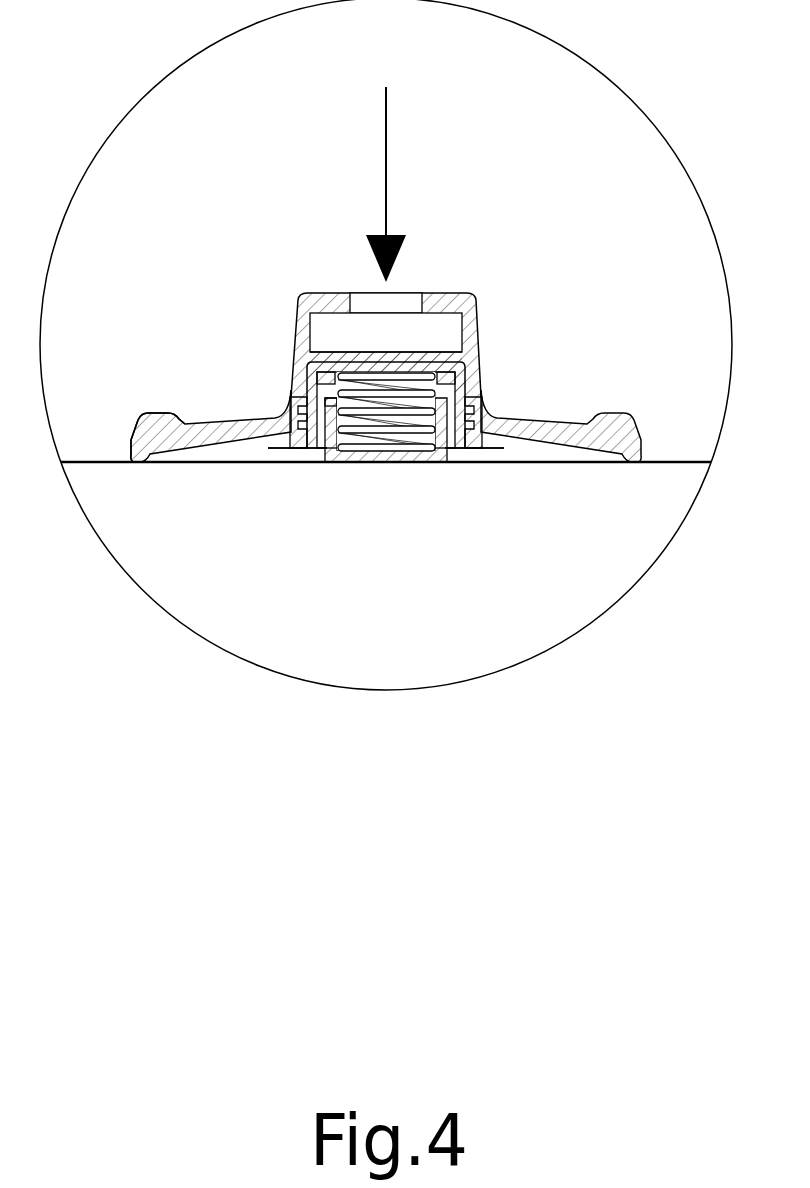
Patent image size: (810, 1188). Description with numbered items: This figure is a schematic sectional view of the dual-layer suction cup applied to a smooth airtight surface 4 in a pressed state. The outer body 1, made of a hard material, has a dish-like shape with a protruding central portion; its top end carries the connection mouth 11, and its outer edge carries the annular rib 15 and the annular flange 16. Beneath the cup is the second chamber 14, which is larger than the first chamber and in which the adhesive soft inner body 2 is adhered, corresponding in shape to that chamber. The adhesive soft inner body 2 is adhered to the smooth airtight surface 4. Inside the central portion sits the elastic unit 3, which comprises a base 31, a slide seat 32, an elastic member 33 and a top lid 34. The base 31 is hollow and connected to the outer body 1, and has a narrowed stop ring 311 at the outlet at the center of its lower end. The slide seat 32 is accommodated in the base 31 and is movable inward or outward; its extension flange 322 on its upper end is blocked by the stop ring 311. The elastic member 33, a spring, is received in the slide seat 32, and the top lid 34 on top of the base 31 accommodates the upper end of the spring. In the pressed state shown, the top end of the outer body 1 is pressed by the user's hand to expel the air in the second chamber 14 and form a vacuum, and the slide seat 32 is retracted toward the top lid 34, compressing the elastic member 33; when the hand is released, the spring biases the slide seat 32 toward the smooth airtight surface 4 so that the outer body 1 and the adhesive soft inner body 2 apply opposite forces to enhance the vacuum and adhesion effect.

The outer body 1 is at (458, 298).
The connection mouth 11 is at (370, 330).
The adhesive soft inner body 2 is at (547, 448).
The elastic unit 3 is at (294, 476).
The smooth airtight surface 4 is at (595, 572).
The second chamber 14 is at (508, 457).
The annular rib 15 is at (155, 423).
The annular flange 16 is at (133, 453).
The base 31 is at (460, 405).
The stop ring 311 is at (293, 407).
The slide seat 32 is at (493, 448).
The extension flange 322 is at (326, 398).
The elastic member 33 is at (375, 393).
The top lid 34 is at (425, 355).